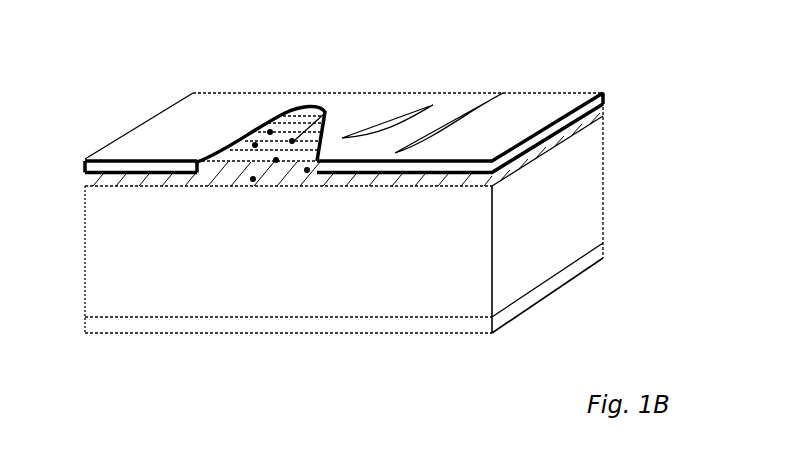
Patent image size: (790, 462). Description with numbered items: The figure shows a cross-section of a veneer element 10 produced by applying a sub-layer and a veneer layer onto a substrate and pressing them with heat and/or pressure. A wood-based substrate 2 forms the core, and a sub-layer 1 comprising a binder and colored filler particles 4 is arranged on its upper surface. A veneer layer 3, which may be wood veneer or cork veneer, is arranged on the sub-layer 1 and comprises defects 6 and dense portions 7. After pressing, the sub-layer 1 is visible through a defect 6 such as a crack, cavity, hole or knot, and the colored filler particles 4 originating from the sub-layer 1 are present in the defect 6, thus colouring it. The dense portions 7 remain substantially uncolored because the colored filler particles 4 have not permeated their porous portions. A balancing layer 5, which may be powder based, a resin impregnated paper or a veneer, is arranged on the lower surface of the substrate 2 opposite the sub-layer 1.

The veneer element 10 is at (101, 88).
The dense portions 7 is at (203, 108).
The defect 6 is at (302, 127).
The colored filler particles 4 is at (324, 112).
The veneer layer 3 is at (604, 94).
The sub-layer 1 is at (597, 123).
The substrate 2 is at (582, 198).
The balancing layer 5 is at (597, 258).